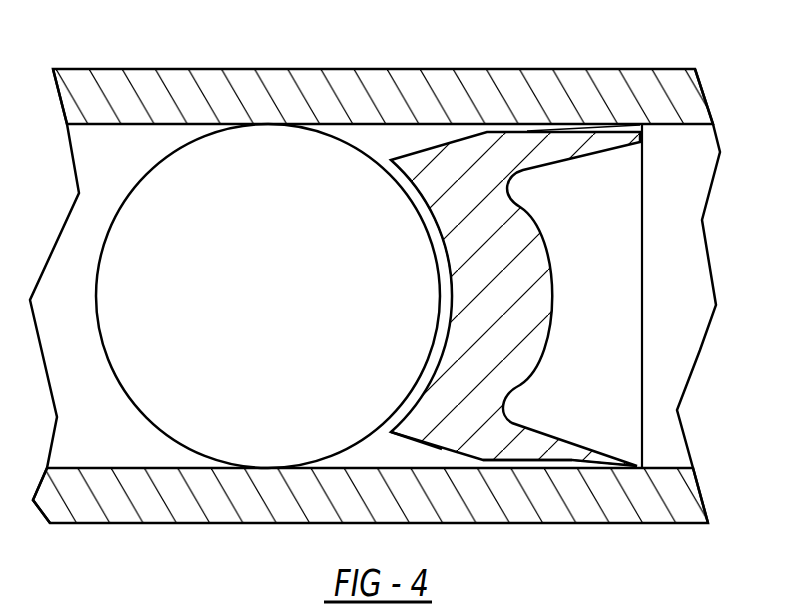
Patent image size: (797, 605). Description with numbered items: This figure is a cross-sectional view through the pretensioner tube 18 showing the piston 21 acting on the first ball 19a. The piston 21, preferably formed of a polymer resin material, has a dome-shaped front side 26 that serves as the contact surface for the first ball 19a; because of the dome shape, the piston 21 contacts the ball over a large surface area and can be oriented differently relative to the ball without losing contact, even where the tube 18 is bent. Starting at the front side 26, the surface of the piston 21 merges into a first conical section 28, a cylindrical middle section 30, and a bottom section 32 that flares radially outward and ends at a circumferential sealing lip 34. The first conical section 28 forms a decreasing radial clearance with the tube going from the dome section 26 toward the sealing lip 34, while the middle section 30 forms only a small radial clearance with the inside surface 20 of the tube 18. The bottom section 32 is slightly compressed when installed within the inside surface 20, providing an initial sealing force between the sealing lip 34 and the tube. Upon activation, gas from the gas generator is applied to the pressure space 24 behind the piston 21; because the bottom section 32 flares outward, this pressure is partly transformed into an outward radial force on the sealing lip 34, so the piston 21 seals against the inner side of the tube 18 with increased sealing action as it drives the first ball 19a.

The tube 18 is at (206, 69).
The inside surface 20 is at (88, 128).
The first ball 19a is at (320, 152).
The piston 21 is at (530, 122).
The pressure space 24 is at (668, 280).
The front side 26 is at (422, 392).
The first conical section 28 is at (442, 448).
The cylindrical middle section 30 is at (530, 461).
The bottom section 32 is at (593, 466).
The sealing lip 34 is at (643, 447).